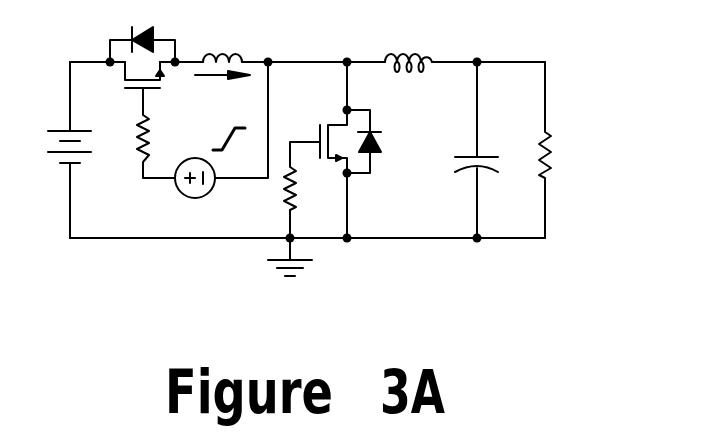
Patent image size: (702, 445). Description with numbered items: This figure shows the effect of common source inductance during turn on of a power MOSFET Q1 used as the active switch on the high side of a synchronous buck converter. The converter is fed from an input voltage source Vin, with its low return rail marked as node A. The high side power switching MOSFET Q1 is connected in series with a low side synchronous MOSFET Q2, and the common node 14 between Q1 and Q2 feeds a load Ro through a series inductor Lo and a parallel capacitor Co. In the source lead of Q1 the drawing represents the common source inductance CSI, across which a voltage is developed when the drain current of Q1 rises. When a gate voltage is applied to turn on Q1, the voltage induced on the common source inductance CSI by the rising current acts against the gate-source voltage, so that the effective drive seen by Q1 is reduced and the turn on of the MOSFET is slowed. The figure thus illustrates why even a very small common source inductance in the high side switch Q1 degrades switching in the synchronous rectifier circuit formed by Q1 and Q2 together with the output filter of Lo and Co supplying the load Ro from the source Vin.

The switching node 14 is at (322, 40).
The high side power switching MOSFET Q1 is at (189, 112).
The low side synchronous MOSFET Q2 is at (332, 150).
The series inductor Lo is at (408, 47).
The parallel capacitor Co is at (483, 150).
The load Ro is at (565, 150).
The input voltage source Vin is at (57, 150).
The node A is at (90, 219).
The common source inductance CSI is at (223, 69).